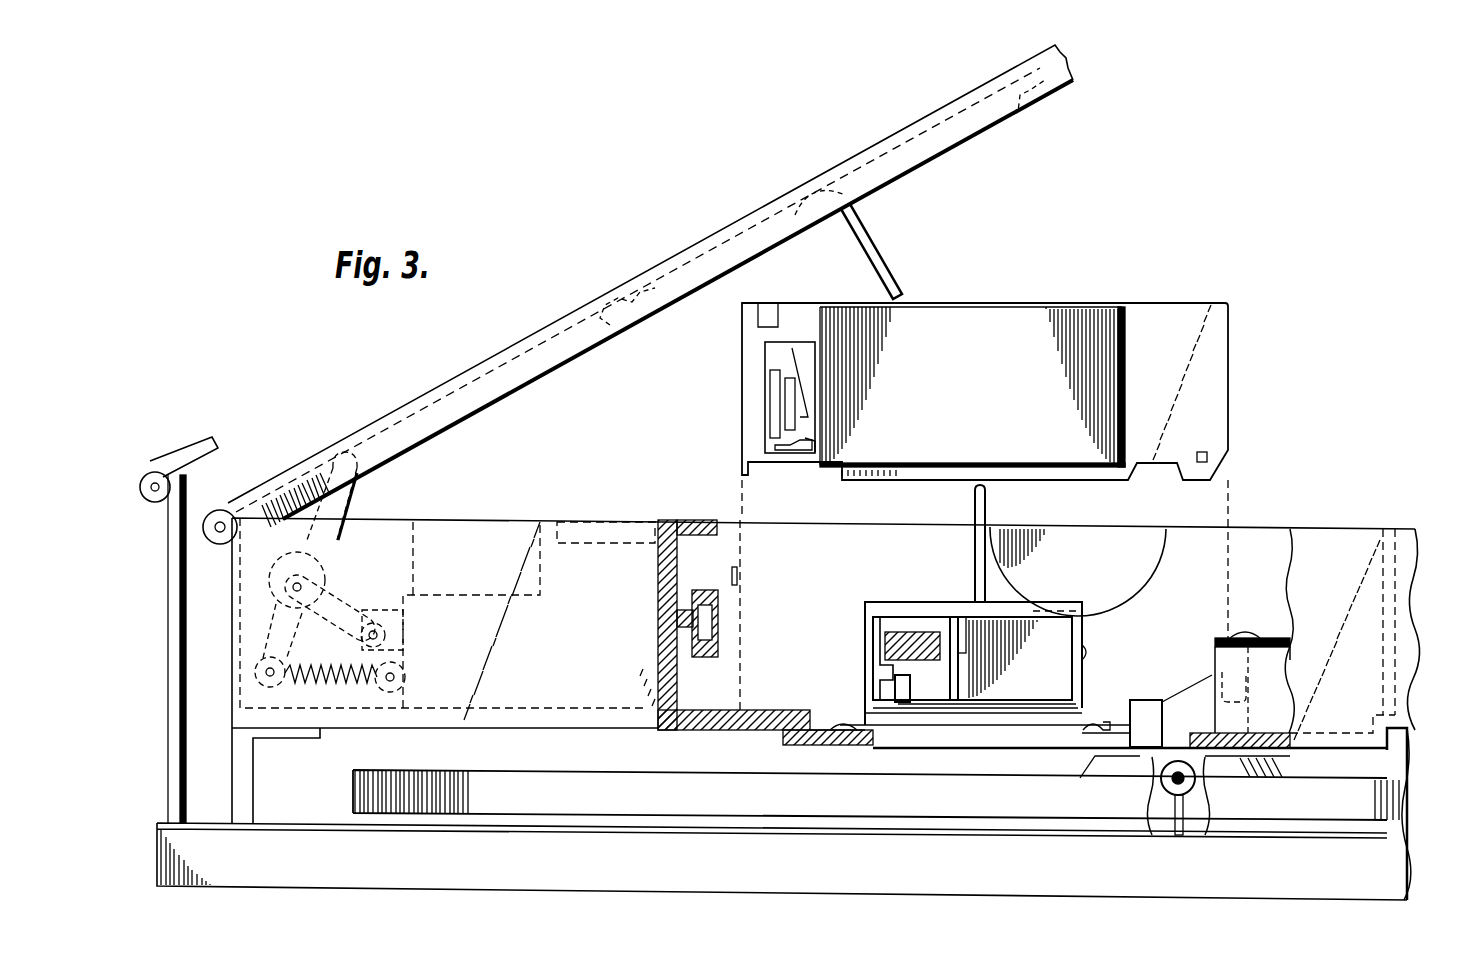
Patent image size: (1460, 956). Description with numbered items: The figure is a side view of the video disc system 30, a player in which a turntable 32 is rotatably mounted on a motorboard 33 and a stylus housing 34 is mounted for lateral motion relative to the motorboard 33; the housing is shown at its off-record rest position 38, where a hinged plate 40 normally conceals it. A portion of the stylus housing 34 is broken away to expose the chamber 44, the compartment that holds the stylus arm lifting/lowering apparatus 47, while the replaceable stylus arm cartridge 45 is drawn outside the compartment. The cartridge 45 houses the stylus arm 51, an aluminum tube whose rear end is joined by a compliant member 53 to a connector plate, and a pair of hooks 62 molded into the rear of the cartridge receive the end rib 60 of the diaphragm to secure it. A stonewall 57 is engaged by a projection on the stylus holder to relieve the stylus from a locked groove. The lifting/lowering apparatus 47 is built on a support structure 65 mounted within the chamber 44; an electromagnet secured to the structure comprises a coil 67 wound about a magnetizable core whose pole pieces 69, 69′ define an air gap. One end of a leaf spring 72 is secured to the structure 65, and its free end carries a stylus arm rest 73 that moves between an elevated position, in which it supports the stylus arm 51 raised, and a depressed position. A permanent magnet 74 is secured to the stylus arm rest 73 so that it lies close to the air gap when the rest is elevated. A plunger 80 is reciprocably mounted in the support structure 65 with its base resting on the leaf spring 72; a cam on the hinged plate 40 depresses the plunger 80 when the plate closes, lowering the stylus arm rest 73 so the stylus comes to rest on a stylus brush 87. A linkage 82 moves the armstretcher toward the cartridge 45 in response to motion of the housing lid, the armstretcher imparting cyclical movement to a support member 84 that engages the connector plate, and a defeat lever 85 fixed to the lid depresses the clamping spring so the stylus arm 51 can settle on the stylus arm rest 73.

The video disc system 30 is at (1275, 410).
The turntable 32 is at (353, 779).
The motorboard 33 is at (222, 797).
The stylus housing 34 is at (1425, 633).
The off-record rest position 38 is at (231, 612).
The hinged plate 40 is at (178, 457).
The chamber 44 is at (280, 558).
The stylus arm cartridge 45 is at (1142, 298).
The stylus arm lifting/lowering apparatus 47 is at (885, 598).
The stylus arm 51 is at (818, 462).
The compliant member 53 is at (785, 452).
The stonewall 57 is at (1143, 706).
The end rib 60 is at (772, 396).
The hook 62 is at (790, 372).
The support structure 65 is at (937, 606).
The coil 67 is at (912, 632).
The pole piece 69 is at (935, 708).
The pole piece 69′ is at (875, 642).
The leaf spring 72 is at (1008, 713).
The stylus arm rest 73 is at (900, 704).
The permanent magnet 74 is at (898, 677).
The plunger 80 is at (985, 511).
The linkage 82 is at (338, 570).
The support member 84 is at (700, 658).
The defeat lever 85 is at (878, 258).
The stylus brush 87 is at (1196, 783).